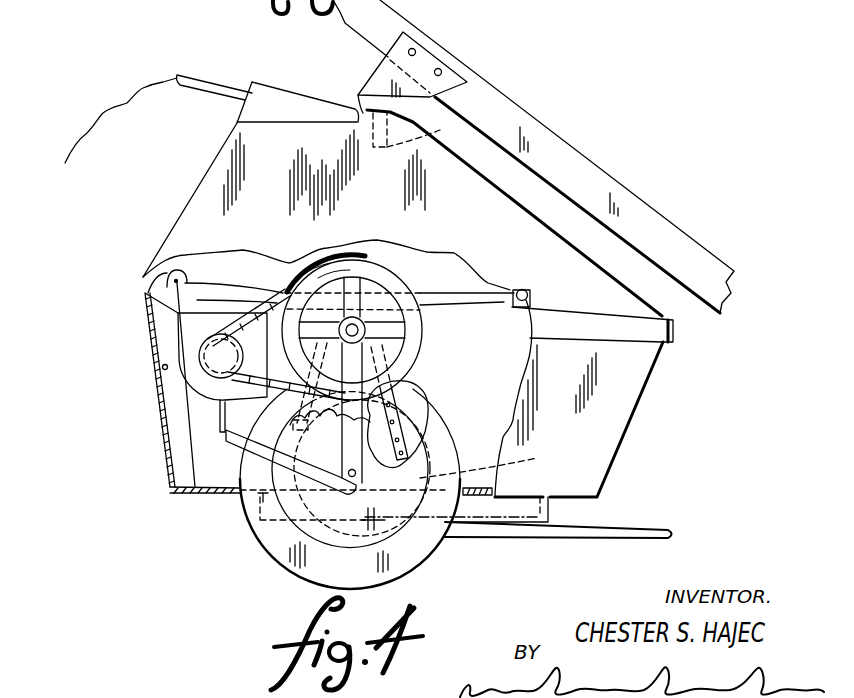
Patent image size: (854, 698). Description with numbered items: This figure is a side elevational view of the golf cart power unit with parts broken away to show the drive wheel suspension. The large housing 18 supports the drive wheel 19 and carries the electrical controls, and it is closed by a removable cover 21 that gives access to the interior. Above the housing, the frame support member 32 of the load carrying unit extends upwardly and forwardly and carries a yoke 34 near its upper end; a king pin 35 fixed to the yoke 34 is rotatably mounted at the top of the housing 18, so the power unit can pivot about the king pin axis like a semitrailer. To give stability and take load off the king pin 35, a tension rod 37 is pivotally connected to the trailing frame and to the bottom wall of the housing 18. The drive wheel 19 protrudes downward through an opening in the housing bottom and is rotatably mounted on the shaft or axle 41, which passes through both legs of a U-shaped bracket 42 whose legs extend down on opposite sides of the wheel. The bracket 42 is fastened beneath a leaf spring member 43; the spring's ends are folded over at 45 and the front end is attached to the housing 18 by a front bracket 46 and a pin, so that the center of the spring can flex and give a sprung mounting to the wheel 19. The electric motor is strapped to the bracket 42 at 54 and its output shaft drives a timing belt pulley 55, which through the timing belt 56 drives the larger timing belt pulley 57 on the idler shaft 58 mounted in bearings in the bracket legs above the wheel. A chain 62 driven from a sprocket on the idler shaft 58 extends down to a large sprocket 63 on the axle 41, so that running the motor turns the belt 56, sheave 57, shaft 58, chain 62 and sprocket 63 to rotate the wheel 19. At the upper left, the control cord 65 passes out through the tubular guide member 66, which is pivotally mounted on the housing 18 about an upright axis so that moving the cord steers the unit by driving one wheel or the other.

The housing 18 is at (167, 451).
The drive wheel 19 is at (268, 527).
The cover 21 is at (470, 199).
The frame support member 32 is at (580, 164).
The yoke 34 is at (383, 85).
The king pin 35 is at (430, 131).
The tension rod 37 is at (562, 535).
The shaft or axle 41 is at (349, 470).
The U-shaped bracket 42 is at (258, 410).
The leaf spring member 43 is at (222, 294).
The folded-over spring ends 45 is at (197, 267).
The front bracket 46 is at (142, 289).
The motor strap mounting 54 is at (190, 394).
The timing belt pulley 55 is at (196, 340).
The timing belt 56 is at (287, 290).
The timing belt pulley 57 is at (342, 285).
The idler shaft 58 is at (366, 331).
The chain 62 is at (420, 395).
The large sprocket 63 is at (427, 429).
The control cord 65 is at (103, 110).
The guide member 66 is at (193, 82).